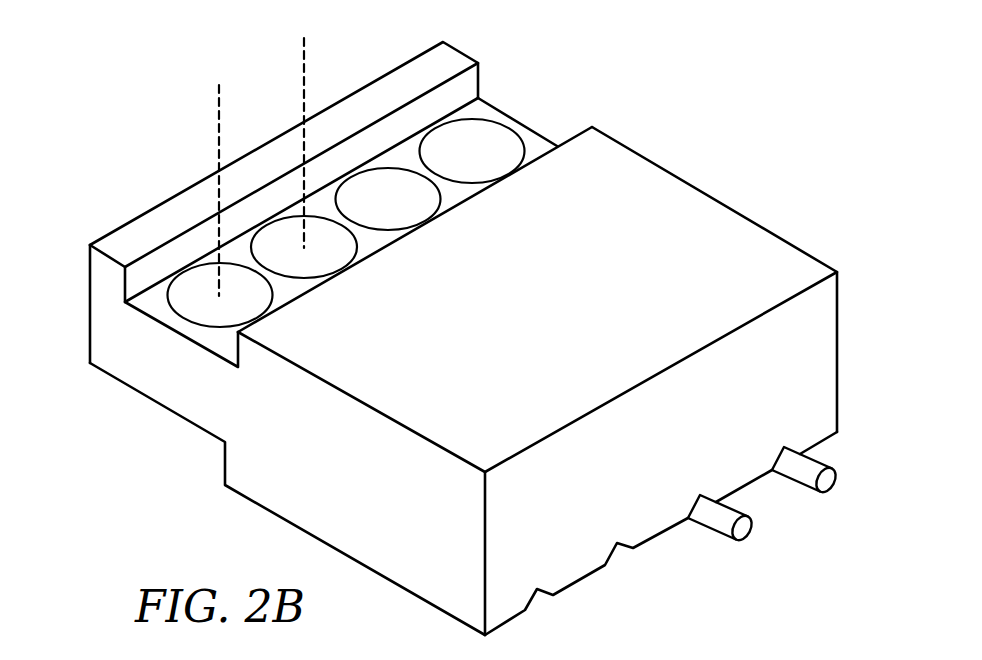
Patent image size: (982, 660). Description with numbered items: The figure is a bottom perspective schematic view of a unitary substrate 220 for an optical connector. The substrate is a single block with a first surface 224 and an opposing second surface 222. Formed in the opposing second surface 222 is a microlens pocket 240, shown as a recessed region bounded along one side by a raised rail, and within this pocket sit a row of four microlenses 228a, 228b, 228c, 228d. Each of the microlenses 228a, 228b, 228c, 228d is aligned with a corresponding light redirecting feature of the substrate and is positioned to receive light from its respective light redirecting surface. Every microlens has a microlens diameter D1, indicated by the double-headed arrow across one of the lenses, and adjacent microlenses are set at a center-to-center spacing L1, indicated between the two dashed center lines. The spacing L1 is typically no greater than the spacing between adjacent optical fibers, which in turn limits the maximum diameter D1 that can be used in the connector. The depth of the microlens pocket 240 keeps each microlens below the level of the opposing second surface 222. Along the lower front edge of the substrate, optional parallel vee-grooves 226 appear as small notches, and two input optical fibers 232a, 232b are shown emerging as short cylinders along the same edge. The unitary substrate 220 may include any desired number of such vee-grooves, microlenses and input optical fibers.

The unitary substrate 220 is at (112, 347).
The opposing second surface 222 is at (697, 213).
The first surface 224 is at (247, 498).
The parallel vee-grooves 226 is at (625, 548).
The microlens 228a is at (502, 137).
The microlens 228b is at (426, 211).
The microlens 228c is at (344, 259).
The microlens 228d is at (262, 307).
The input optical fiber 232a is at (803, 477).
The input optical fiber 232b is at (717, 522).
The microlens pocket 240 is at (508, 75).
The center-to-center spacing L1 is at (294, 58).
The microlens diameter D1 is at (514, 152).